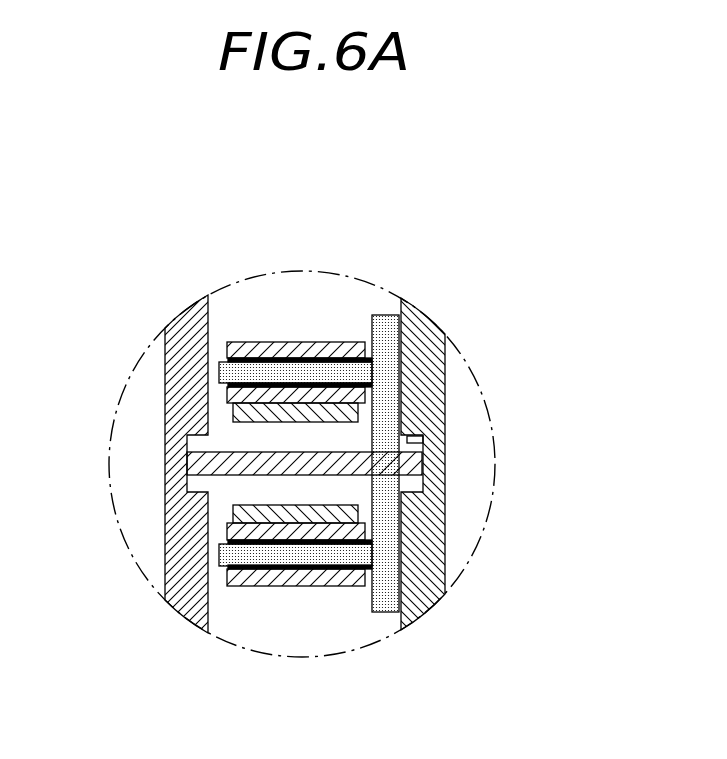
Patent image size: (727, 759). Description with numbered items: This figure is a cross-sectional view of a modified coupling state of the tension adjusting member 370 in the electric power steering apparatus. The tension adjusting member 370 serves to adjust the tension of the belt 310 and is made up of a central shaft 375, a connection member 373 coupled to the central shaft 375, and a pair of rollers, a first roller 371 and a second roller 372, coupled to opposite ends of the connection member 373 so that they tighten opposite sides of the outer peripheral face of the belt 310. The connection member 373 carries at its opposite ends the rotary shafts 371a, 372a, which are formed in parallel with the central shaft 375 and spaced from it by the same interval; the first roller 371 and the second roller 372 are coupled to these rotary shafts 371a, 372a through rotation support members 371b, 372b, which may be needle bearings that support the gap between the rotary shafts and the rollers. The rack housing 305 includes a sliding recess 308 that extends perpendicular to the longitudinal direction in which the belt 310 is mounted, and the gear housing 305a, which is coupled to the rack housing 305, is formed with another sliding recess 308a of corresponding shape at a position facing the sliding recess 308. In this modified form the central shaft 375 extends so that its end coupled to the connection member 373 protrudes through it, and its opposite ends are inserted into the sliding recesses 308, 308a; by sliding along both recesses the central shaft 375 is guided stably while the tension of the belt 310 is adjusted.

The rack housing 305 is at (175, 352).
The gear housing 305a is at (432, 478).
The sliding recess 308 is at (185, 447).
The sliding recess 308a is at (408, 437).
The belt 310 is at (243, 417).
The tension adjusting member 370 is at (396, 300).
The first roller 371 is at (238, 338).
The rotary shaft 371a is at (280, 368).
The rotation support member 371b is at (252, 348).
The second roller 372 is at (250, 580).
The rotary shaft 372a is at (348, 555).
The rotation support member 372b is at (327, 572).
The connection member 373 is at (390, 338).
The central shaft 375 is at (352, 470).